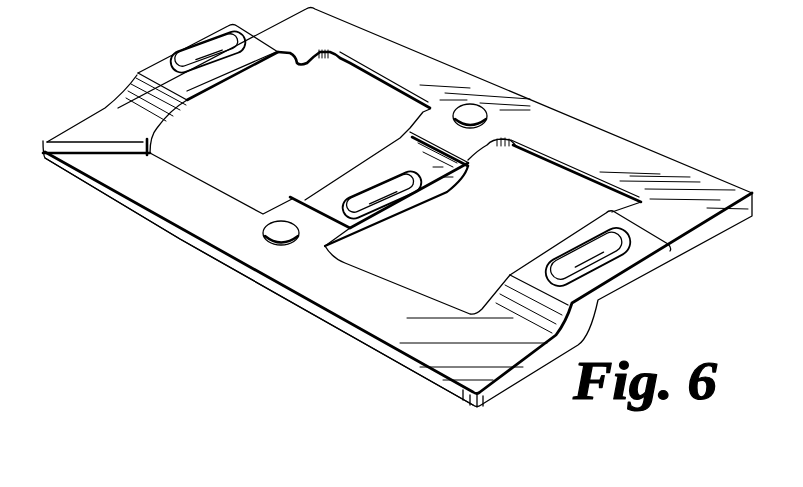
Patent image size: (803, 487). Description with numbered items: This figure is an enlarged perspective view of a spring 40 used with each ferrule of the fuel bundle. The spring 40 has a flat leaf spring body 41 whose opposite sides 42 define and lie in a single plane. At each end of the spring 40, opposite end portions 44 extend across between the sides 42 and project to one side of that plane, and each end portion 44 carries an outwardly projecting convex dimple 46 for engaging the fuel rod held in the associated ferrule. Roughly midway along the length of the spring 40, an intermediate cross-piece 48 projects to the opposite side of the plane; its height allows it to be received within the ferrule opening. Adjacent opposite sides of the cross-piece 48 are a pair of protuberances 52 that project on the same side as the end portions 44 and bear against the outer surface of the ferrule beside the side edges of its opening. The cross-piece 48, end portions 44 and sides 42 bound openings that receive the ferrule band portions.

The spring 40 is at (195, 240).
The flat leaf spring body 41 is at (347, 332).
The sides 42 is at (152, 200).
The spring end portions 44 is at (150, 70).
The convex dimple 46 is at (203, 47).
The cross-piece 48 is at (313, 193).
The protuberances 52 is at (281, 222).